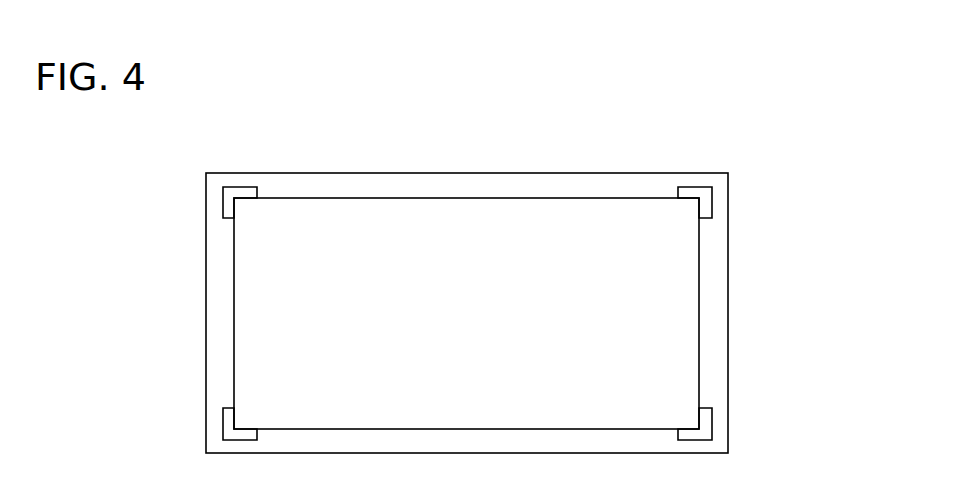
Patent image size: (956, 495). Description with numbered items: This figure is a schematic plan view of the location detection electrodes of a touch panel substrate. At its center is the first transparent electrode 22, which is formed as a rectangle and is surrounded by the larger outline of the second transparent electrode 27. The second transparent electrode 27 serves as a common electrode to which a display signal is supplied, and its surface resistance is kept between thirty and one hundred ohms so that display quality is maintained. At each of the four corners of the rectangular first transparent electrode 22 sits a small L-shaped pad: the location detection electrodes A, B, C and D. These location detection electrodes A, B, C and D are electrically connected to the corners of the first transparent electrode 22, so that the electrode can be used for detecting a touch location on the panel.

The first transparent electrode 22 is at (670, 288).
The second transparent electrode 27 is at (714, 335).
The location detection electrode A is at (232, 199).
The location detection electrode B is at (703, 200).
The location detection electrode C is at (232, 425).
The location detection electrode D is at (703, 431).